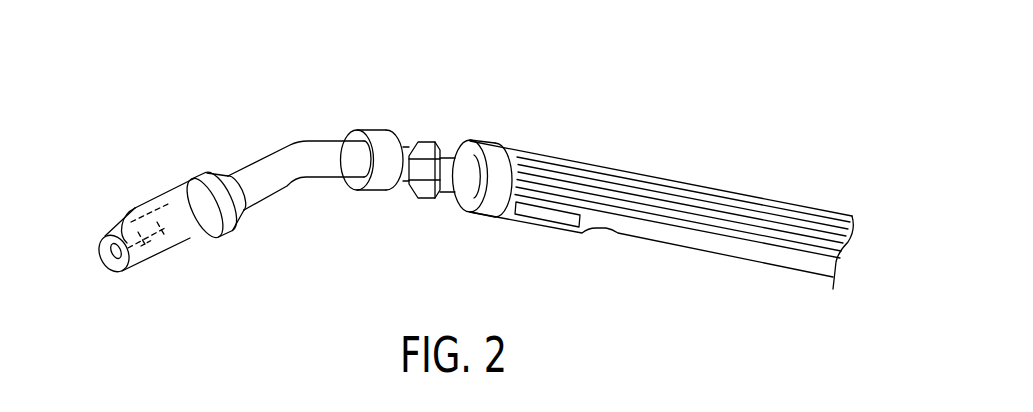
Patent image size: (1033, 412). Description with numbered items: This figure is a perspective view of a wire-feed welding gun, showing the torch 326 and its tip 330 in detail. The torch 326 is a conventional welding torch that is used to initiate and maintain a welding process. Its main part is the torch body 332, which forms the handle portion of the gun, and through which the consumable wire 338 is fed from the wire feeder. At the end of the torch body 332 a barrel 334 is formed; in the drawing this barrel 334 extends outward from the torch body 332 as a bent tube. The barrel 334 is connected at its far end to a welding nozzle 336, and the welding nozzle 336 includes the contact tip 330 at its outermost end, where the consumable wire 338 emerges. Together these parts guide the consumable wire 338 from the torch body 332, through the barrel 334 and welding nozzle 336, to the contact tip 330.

The torch 326 is at (690, 130).
The contact tip 330 is at (168, 193).
The torch body 332 is at (557, 158).
The barrel 334 is at (297, 142).
The welding nozzle 336 is at (150, 202).
The consumable wire 338 is at (122, 217).